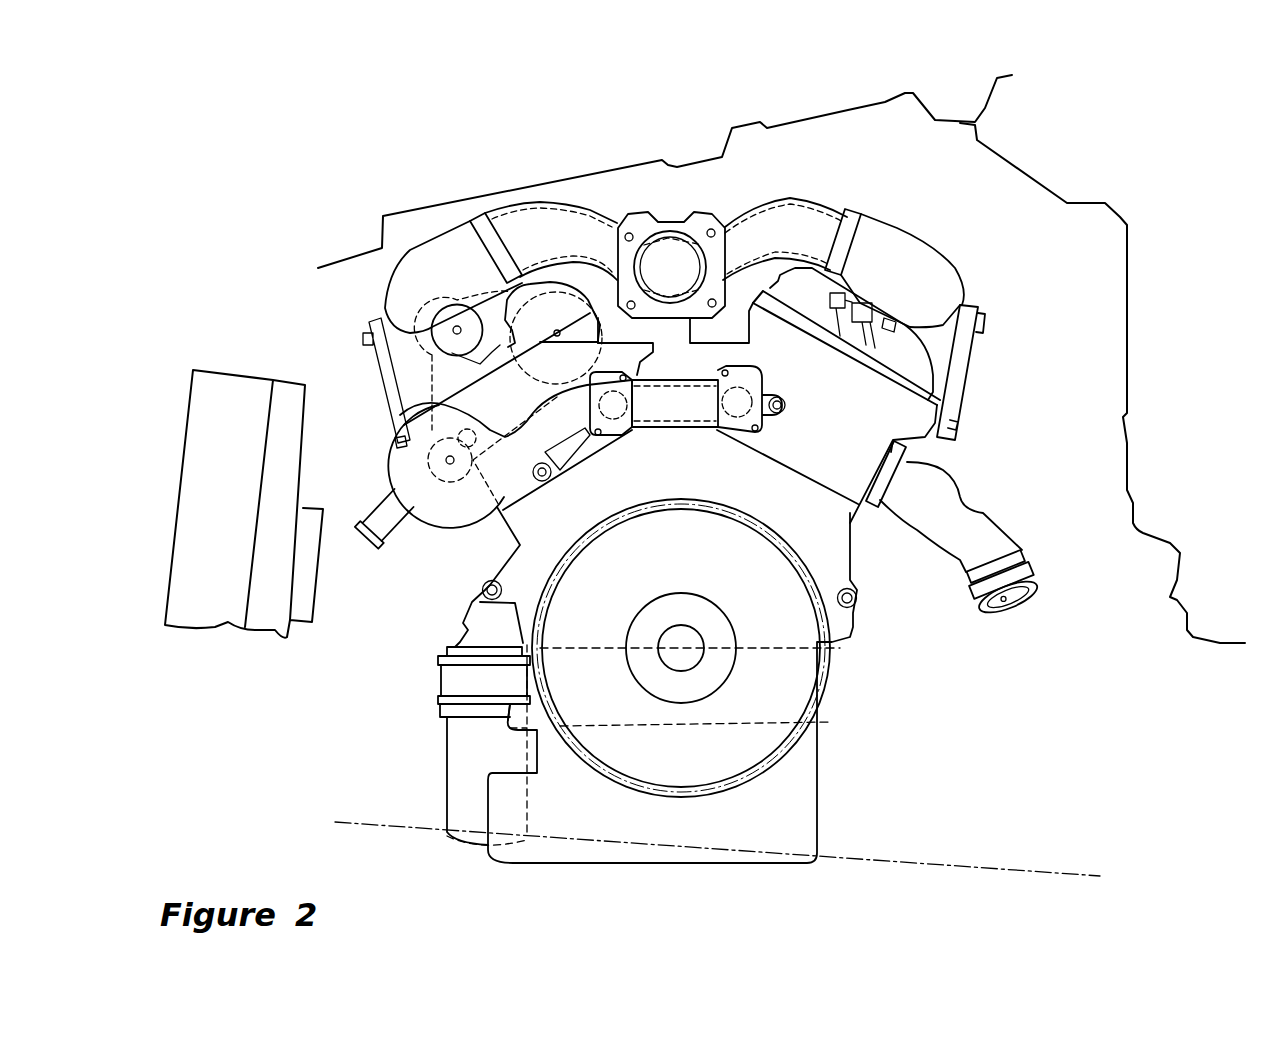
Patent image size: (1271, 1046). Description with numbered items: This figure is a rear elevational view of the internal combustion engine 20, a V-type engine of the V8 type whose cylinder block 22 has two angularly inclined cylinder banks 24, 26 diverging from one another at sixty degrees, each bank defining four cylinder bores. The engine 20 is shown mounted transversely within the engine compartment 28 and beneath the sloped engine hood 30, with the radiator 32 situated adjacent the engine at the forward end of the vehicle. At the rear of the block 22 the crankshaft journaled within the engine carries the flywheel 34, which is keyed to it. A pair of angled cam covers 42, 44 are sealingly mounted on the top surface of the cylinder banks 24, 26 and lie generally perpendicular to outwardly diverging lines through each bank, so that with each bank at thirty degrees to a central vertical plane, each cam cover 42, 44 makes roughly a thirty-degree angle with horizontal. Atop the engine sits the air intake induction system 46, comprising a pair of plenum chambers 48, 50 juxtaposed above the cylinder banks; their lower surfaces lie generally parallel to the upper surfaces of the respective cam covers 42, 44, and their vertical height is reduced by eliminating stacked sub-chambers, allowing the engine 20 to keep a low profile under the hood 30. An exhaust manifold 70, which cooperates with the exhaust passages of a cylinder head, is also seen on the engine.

The internal combustion engine 20 is at (991, 650).
The cylinder block 22 is at (857, 563).
The cylinder bank 24 is at (860, 515).
The cylinder bank 26 is at (497, 542).
The engine compartment 28 is at (1123, 332).
The engine hood 30 is at (845, 110).
The radiator 32 is at (177, 478).
The flywheel 34 is at (832, 667).
The cam cover 42 is at (387, 372).
The cam cover 44 is at (950, 343).
The air intake induction system 46 is at (851, 186).
The plenum chamber 48 is at (905, 237).
The plenum chamber 50 is at (445, 240).
The exhaust manifold 70 is at (963, 492).